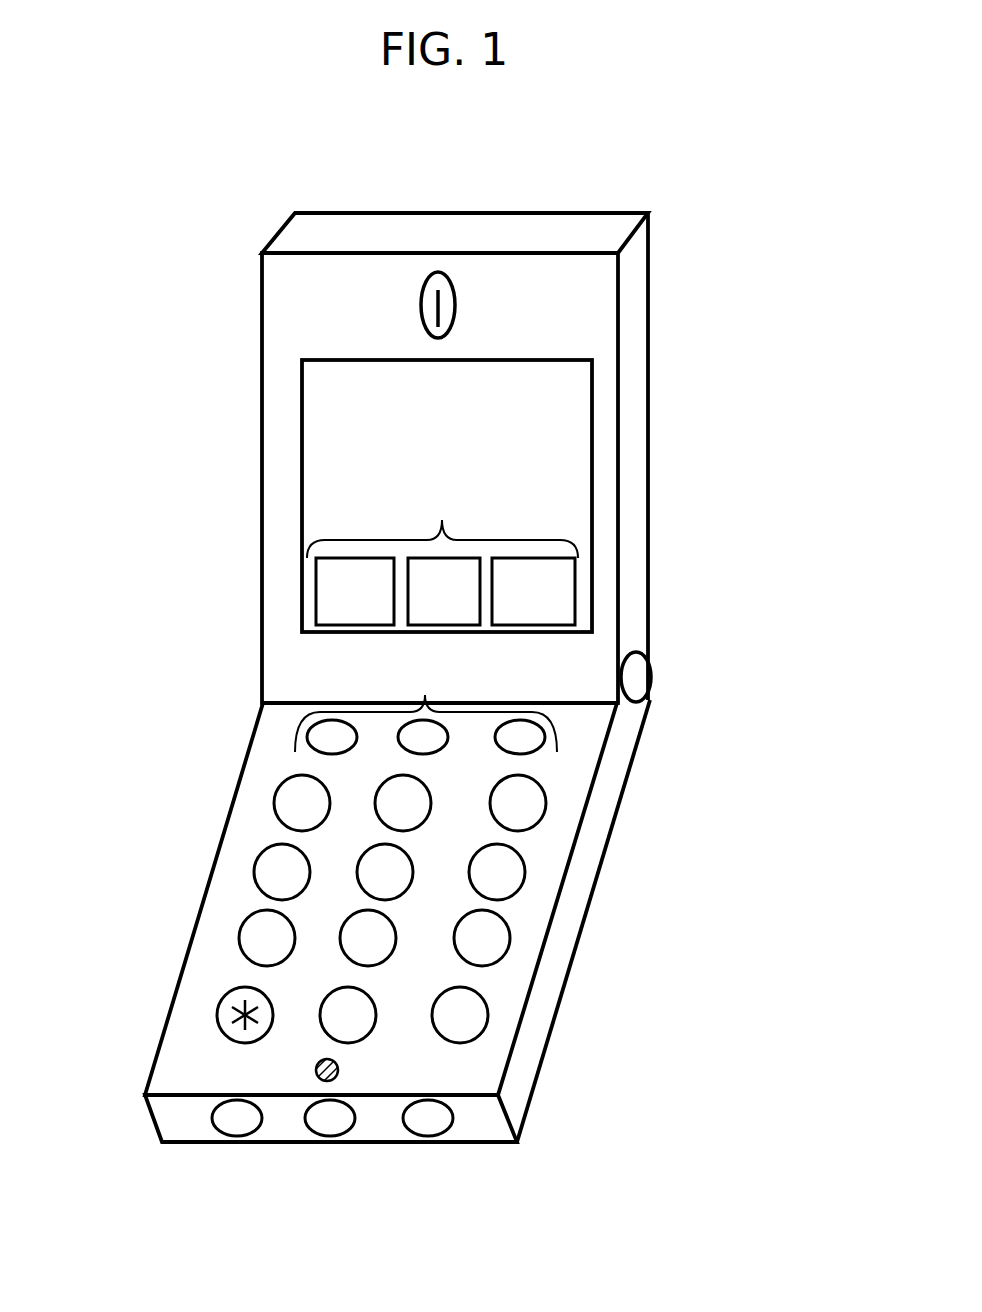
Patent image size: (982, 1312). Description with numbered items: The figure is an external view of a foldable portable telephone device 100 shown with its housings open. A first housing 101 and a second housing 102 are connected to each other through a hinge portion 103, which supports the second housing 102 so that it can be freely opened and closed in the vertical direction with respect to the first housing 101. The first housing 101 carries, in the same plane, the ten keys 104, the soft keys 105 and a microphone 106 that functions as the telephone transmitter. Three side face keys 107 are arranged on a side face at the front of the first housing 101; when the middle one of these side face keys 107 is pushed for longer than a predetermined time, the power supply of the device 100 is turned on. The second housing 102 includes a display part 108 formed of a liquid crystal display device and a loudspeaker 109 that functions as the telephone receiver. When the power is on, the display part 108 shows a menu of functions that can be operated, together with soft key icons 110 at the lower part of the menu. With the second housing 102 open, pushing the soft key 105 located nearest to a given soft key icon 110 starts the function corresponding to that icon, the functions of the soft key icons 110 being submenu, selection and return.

The foldable portable telephone device 100 is at (195, 211).
The first housing 101 is at (598, 895).
The second housing 102 is at (653, 490).
The hinge portion 103 is at (653, 677).
The ten keys 104 is at (240, 935).
The soft keys 105 is at (425, 675).
The microphone 106 is at (316, 1067).
The side face keys 107 is at (205, 1128).
The display part 108 is at (383, 357).
The loudspeaker 109 is at (453, 290).
The soft key icons 110 is at (442, 521).